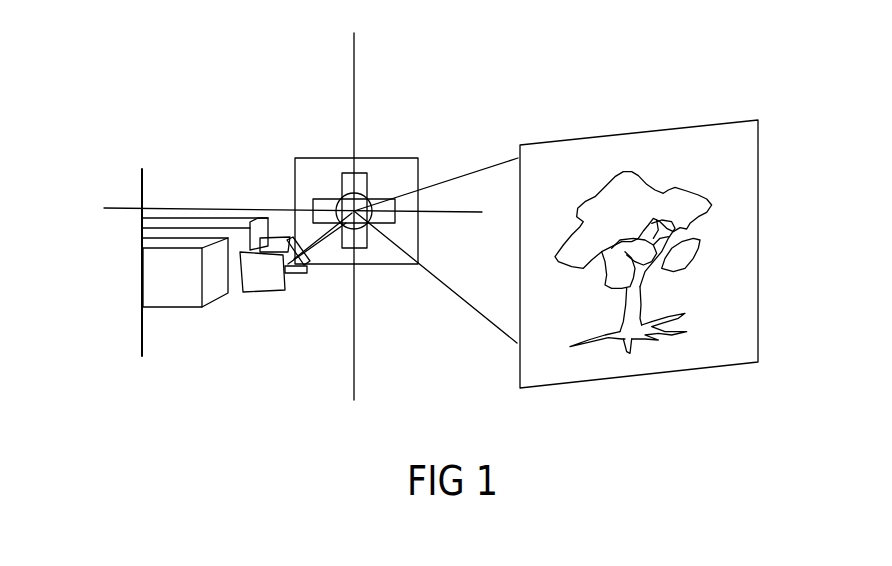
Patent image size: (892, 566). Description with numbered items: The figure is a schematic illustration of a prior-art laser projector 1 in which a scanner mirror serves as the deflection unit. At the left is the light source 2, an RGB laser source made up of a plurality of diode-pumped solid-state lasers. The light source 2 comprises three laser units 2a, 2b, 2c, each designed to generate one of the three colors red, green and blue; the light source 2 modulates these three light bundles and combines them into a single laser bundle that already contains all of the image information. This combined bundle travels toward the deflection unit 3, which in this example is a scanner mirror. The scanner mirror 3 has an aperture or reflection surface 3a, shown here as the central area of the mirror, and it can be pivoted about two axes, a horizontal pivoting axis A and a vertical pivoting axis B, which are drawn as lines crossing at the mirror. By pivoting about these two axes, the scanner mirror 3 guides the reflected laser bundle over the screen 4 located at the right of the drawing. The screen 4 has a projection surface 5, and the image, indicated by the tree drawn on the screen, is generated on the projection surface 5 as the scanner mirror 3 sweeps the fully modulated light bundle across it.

The projector 1 is at (144, 64).
The light source 2 is at (122, 282).
The laser unit 2a is at (172, 293).
The laser unit 2b is at (177, 232).
The laser unit 2c is at (228, 217).
The deflection unit 3 is at (383, 220).
The reflection surface 3a is at (340, 200).
The screen 4 is at (710, 125).
The projection surface 5 is at (738, 281).